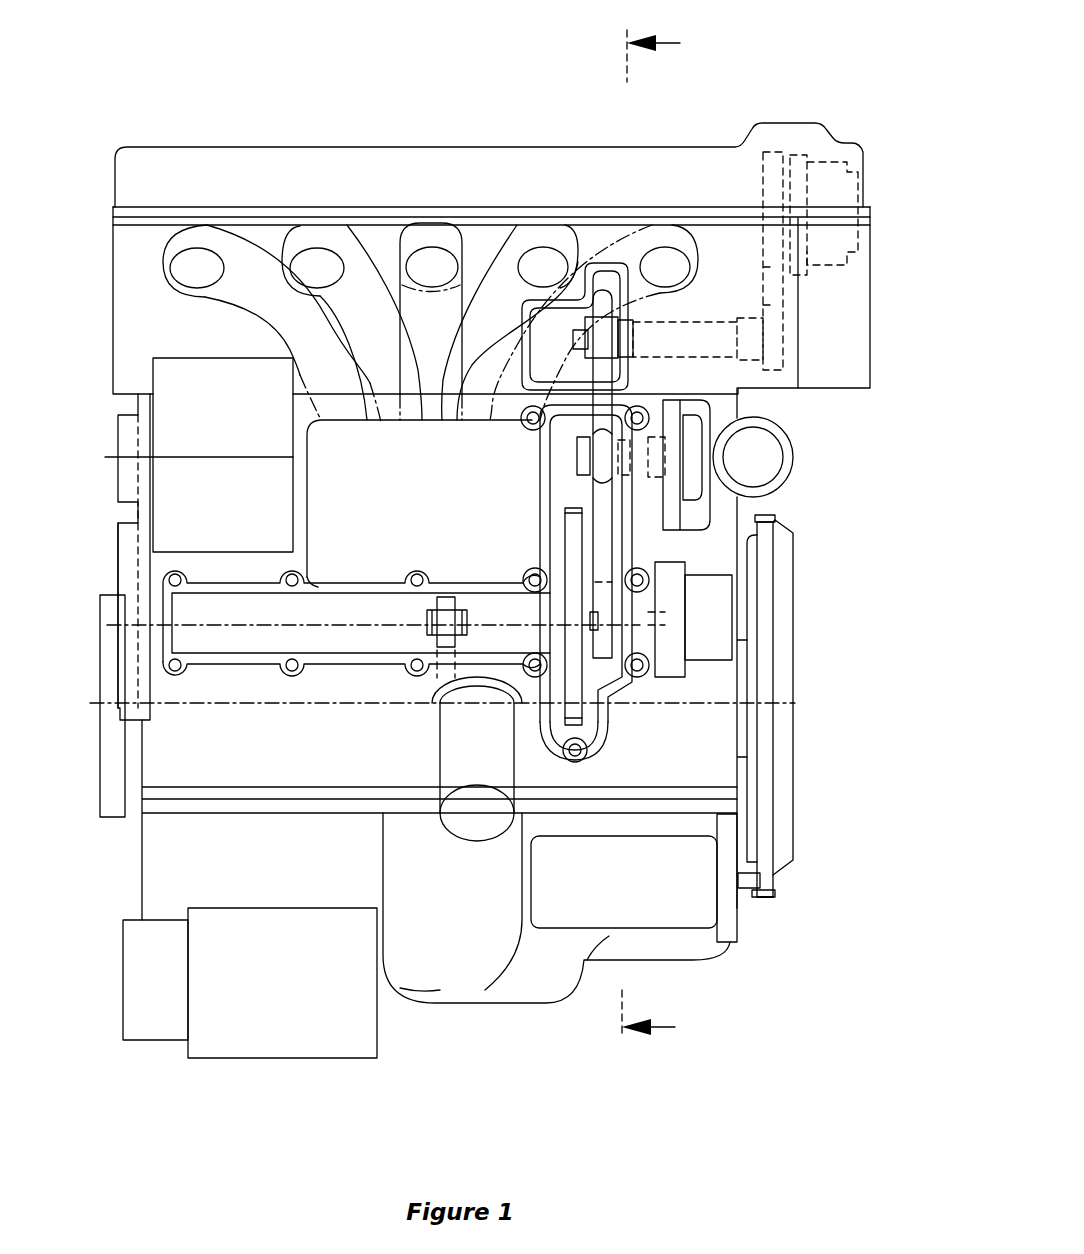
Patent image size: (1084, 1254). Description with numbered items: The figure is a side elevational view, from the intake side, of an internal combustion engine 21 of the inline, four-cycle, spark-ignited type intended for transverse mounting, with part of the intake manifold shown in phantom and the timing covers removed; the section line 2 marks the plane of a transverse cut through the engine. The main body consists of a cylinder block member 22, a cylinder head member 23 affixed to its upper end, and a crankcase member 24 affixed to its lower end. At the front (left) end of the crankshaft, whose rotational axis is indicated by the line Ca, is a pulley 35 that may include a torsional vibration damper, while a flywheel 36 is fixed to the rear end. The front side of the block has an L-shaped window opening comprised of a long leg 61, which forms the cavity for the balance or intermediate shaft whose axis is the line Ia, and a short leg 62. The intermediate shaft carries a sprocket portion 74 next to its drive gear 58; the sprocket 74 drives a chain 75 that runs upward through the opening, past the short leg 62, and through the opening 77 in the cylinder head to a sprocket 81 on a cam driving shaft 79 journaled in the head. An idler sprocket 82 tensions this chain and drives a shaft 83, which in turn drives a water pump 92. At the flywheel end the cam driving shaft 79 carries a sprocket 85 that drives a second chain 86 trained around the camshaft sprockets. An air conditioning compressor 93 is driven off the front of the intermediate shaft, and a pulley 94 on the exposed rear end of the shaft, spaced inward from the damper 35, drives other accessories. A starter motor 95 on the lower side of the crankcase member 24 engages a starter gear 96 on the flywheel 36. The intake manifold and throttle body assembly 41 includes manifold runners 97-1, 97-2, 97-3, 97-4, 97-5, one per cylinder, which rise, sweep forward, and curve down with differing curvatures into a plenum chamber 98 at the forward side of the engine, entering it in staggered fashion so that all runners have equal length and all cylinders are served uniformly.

The section line 2- 2 is at (651, 545).
The internal combustion engine 21 is at (826, 97).
The cylinder block member 22 is at (118, 503).
The cylinder head member 23 is at (108, 285).
The crankcase member 24 is at (134, 886).
The pulley 35 is at (98, 773).
The flywheel 36 is at (785, 590).
The intake manifold and throttle body assembly 41 is at (293, 473).
The drive gear 58 is at (593, 742).
The long leg 61 is at (357, 623).
The short leg 62 is at (575, 455).
The sprocket portion 74 is at (607, 658).
The chain 75 is at (605, 542).
The opening 77 is at (560, 283).
The cam driving shaft 79 is at (672, 322).
The sprocket 81 is at (573, 336).
The idler sprocket 82 is at (590, 478).
The shaft 83 is at (655, 425).
The sprocket 85 is at (800, 358).
The second chain 86 is at (763, 168).
The water pump 92 is at (830, 267).
The air conditioning compressor 93 is at (703, 667).
The pulley 94 is at (118, 565).
The starter motor 95 is at (688, 931).
The starter gear 96 is at (773, 845).
The manifold runner 97-1 is at (230, 307).
The manifold runner 97-2 is at (360, 233).
The manifold runner 97-3 is at (460, 233).
The manifold runner 97-4 is at (510, 233).
The manifold runner 97-5 is at (627, 233).
The plenum chamber 98 is at (293, 537).
The intermediate shaft axis Ia is at (228, 627).
The crankshaft axis Ca is at (337, 707).